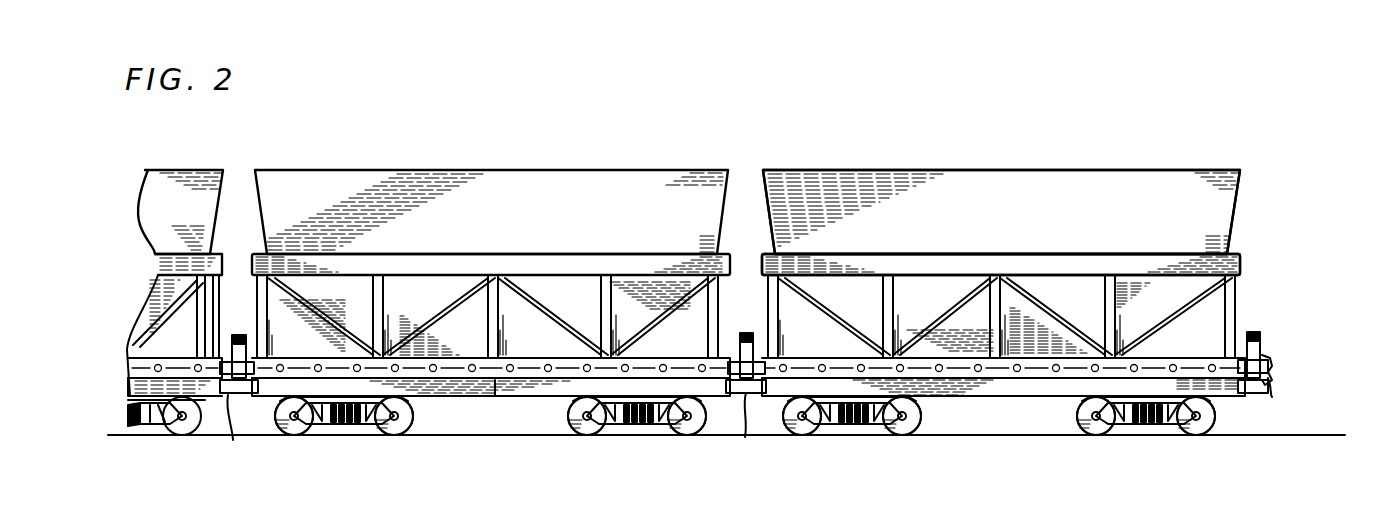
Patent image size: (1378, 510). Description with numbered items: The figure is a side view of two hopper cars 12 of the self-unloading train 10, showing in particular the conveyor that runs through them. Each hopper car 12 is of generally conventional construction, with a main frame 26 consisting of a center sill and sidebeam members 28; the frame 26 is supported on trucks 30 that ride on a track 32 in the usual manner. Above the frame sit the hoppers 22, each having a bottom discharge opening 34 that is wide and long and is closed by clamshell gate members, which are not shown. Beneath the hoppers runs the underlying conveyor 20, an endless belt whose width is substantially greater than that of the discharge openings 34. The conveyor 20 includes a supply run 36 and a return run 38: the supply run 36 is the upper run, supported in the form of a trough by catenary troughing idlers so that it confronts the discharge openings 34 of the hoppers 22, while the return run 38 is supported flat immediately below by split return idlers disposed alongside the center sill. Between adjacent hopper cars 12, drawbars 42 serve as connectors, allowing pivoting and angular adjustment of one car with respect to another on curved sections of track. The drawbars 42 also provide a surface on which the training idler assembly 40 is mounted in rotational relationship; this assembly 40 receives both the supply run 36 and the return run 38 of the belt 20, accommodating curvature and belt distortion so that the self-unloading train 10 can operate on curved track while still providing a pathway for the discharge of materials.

The self-unloading train 10 is at (1222, 155).
The hopper cars 12 is at (183, 183).
The underlying conveyor 20 is at (216, 320).
The hoppers 22 is at (507, 225).
The main frame 26 is at (1240, 263).
The sidebeam members 28 is at (1210, 385).
The trucks 30 is at (395, 425).
The track 32 is at (277, 437).
The bottom discharge opening 34 is at (1190, 342).
The supply run 36 is at (495, 385).
The return run 38 is at (170, 432).
The training idler assembly 40 is at (252, 320).
The drawbars 42 is at (233, 440).